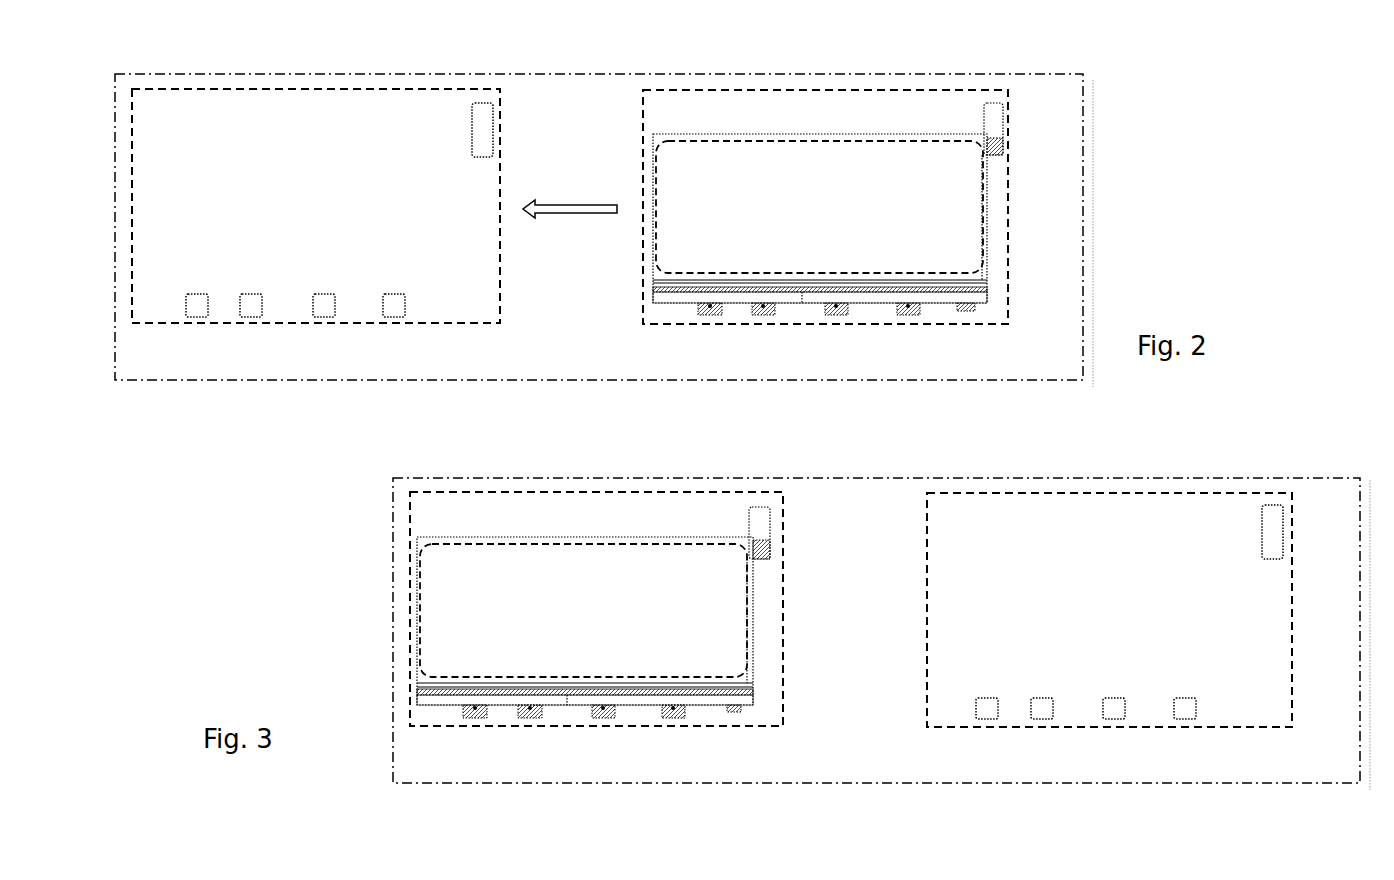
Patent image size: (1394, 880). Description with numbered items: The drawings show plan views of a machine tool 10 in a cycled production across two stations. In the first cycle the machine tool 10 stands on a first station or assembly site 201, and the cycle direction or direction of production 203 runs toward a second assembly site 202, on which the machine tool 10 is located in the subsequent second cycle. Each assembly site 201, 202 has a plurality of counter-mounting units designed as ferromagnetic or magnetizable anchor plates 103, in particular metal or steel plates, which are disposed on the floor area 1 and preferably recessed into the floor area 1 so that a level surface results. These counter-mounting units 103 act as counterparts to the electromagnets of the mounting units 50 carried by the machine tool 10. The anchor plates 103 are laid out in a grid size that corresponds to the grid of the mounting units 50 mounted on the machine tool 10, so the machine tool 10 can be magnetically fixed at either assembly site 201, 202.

In FIG. 2, the floor area 1 is at (920, 382).
In FIG. 3, the floor area 1 is at (1300, 783).
In FIG. 2, the machine tool 10 is at (1020, 188).
In FIG. 3, the machine tool 10 is at (685, 530).
In FIG. 2, the mounting units 50 is at (907, 312).
In FIG. 3, the mounting units 50 is at (658, 717).
In FIG. 2, the counter-mounting units 103 is at (472, 150).
In FIG. 3, the counter-mounting units 103 is at (1265, 532).
In FIG. 2, the first assembly site 201 is at (800, 88).
In FIG. 3, the first assembly site 201 is at (1086, 492).
In FIG. 2, the second assembly site 202 is at (265, 89).
In FIG. 3, the second assembly site 202 is at (548, 490).
In FIG. 2, the direction of production 203 is at (558, 202).